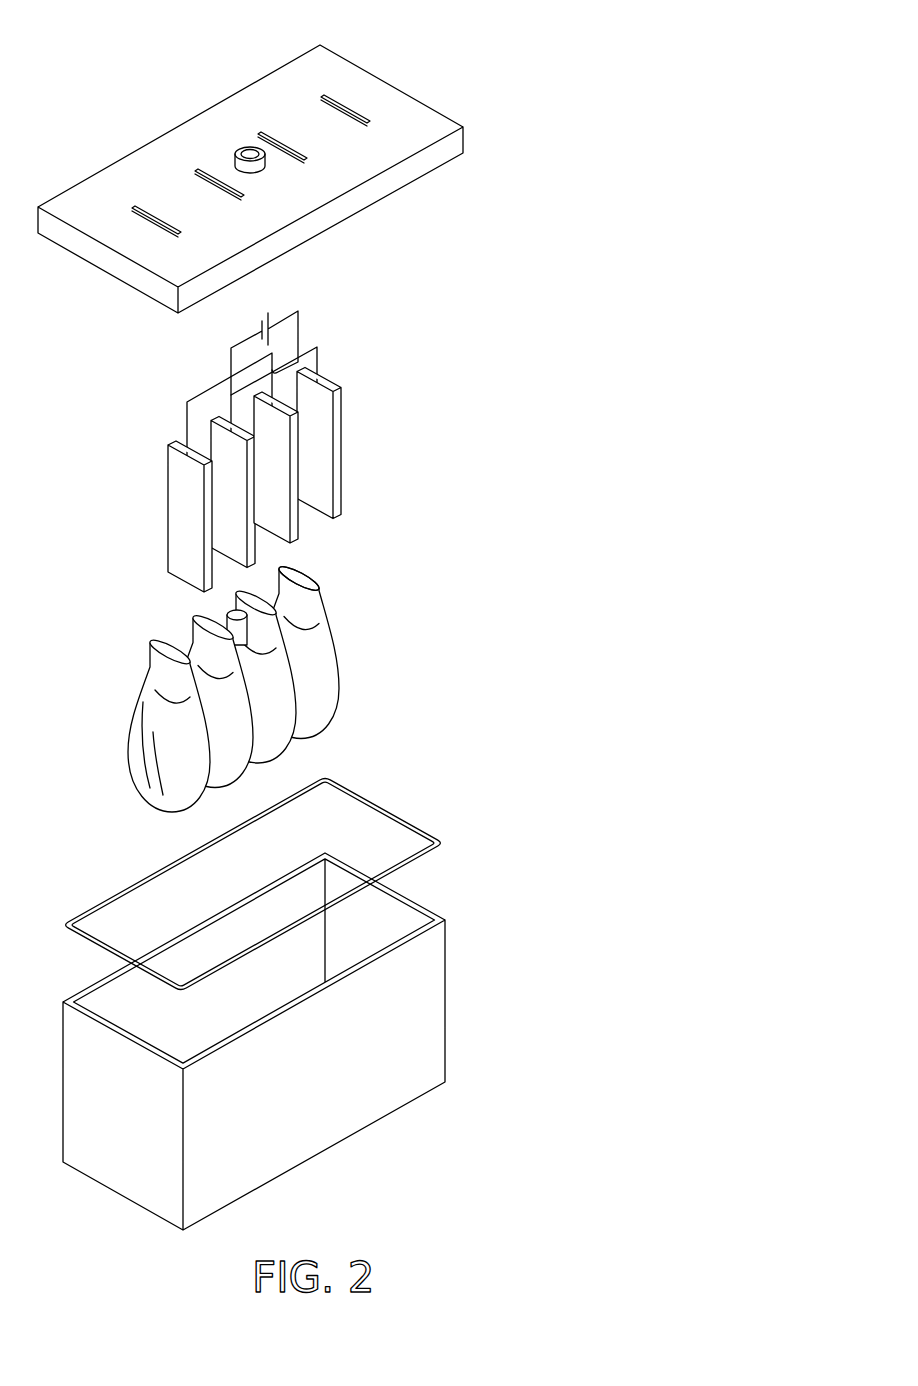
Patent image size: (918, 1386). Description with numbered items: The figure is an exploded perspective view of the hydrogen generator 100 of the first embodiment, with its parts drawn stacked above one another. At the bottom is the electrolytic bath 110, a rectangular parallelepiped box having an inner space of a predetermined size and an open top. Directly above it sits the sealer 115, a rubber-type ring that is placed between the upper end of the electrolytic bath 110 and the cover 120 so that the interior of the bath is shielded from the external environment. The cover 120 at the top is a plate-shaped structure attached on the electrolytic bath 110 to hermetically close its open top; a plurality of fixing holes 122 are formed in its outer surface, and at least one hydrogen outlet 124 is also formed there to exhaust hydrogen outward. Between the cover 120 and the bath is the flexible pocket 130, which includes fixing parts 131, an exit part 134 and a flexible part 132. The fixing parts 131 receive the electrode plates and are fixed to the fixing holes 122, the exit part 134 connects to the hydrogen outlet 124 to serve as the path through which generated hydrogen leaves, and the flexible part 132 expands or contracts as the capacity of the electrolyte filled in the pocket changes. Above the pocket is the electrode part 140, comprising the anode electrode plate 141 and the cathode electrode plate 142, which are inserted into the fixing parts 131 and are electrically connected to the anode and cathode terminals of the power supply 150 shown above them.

The hydrogen generator 100 is at (608, 80).
The electrolytic bath 110 is at (430, 1005).
The sealer 115 is at (387, 802).
The cover 120 is at (271, 179).
The fixing holes 122 is at (193, 177).
The hydrogen outlet 124 is at (240, 147).
The flexible pocket 130 is at (365, 683).
The fixing parts 131 is at (270, 613).
The flexible part 132 is at (272, 687).
The exit part 134 is at (227, 607).
The electrode part 140 is at (327, 417).
The anode electrode plate 141 is at (252, 520).
The cathode electrode plate 142 is at (280, 465).
The power supply 150 is at (298, 287).